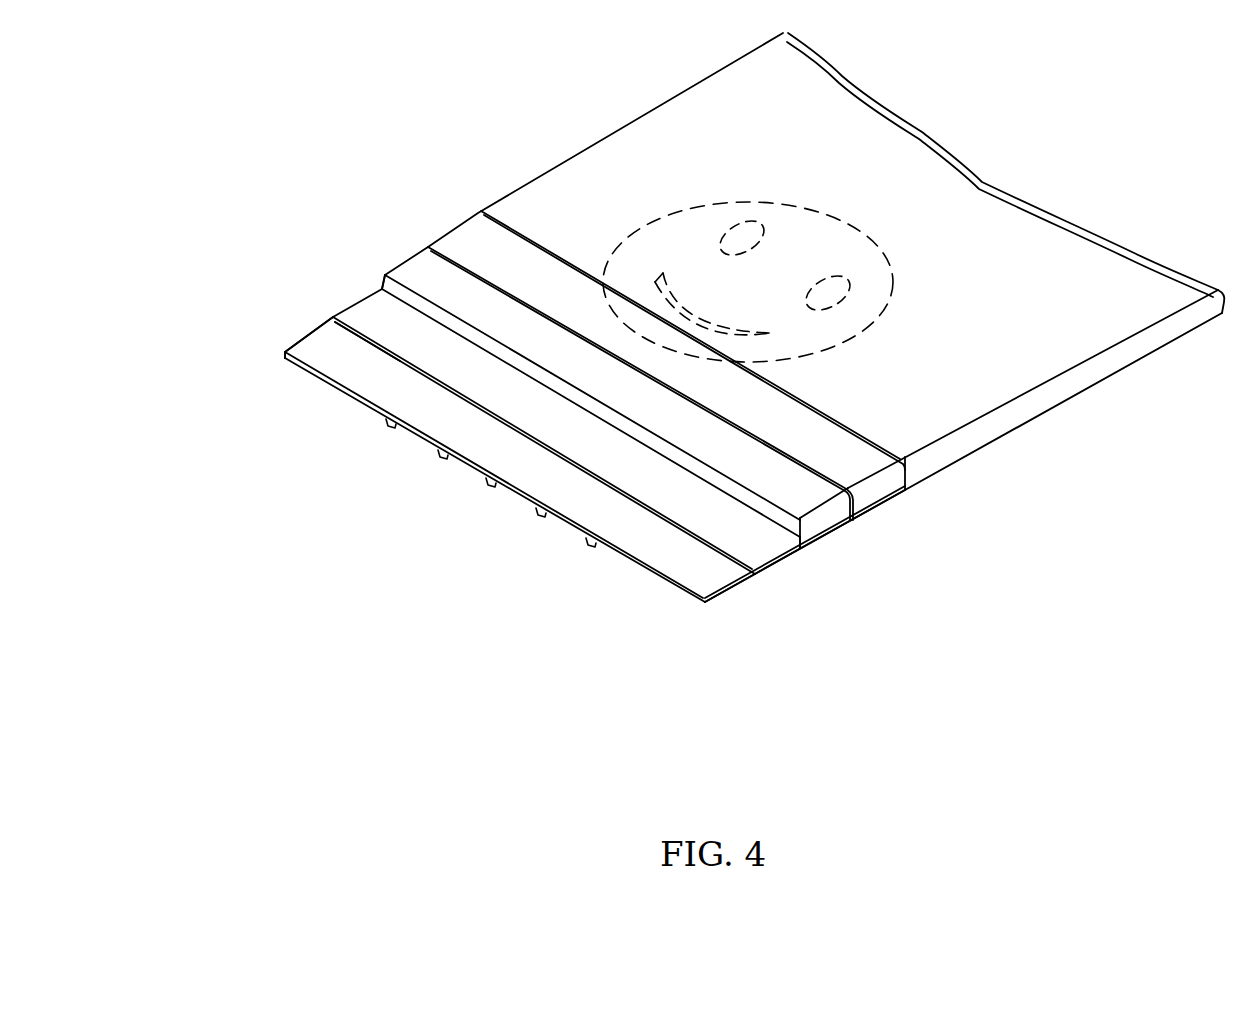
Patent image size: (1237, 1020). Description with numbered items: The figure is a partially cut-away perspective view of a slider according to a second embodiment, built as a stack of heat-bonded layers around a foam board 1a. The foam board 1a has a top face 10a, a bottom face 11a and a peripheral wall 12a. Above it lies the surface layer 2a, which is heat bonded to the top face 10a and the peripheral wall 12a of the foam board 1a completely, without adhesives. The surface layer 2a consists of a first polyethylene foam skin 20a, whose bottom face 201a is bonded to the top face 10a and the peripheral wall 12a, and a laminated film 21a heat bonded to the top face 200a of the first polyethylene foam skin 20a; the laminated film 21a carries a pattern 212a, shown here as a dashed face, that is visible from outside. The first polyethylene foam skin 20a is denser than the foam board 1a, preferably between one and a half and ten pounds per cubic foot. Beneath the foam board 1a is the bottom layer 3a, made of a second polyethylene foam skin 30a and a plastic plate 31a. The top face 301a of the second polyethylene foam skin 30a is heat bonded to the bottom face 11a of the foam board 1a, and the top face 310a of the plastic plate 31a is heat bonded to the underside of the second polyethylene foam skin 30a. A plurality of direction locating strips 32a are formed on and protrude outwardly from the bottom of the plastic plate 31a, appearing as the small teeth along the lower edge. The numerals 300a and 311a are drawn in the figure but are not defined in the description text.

The foam board 1a is at (397, 287).
The surface layer 2a is at (1067, 530).
The bottom layer 3a is at (805, 609).
The top face 10a is at (418, 275).
The bottom face 11a is at (352, 320).
The peripheral wall 12a is at (808, 472).
The first polyethylene foam skin 20a is at (875, 493).
The laminated film 21a is at (938, 450).
The second polyethylene foam skin 30a is at (777, 558).
The plastic plate 31a is at (734, 620).
The direction locating strips 32a is at (443, 455).
The top face 200a is at (458, 240).
The bottom face 201a is at (810, 527).
The pattern 212a is at (680, 213).
The cover plate 300a is at (441, 402).
The top face 301a is at (350, 336).
The top face 310a is at (312, 357).
The cover plate bottom edge 311a is at (322, 384).